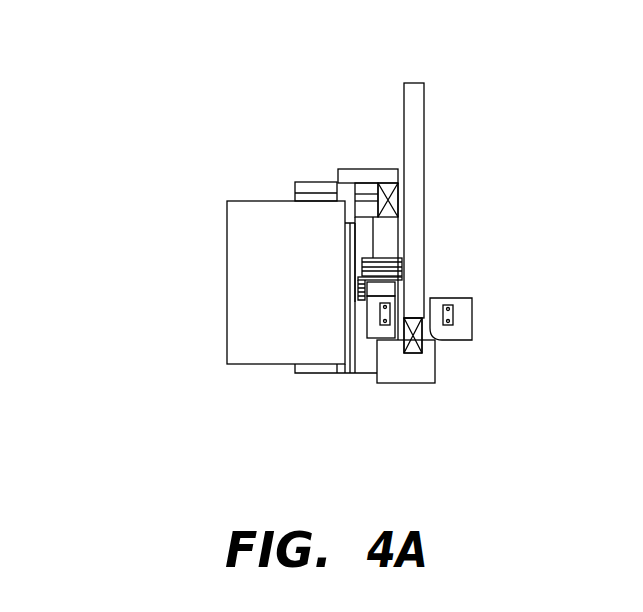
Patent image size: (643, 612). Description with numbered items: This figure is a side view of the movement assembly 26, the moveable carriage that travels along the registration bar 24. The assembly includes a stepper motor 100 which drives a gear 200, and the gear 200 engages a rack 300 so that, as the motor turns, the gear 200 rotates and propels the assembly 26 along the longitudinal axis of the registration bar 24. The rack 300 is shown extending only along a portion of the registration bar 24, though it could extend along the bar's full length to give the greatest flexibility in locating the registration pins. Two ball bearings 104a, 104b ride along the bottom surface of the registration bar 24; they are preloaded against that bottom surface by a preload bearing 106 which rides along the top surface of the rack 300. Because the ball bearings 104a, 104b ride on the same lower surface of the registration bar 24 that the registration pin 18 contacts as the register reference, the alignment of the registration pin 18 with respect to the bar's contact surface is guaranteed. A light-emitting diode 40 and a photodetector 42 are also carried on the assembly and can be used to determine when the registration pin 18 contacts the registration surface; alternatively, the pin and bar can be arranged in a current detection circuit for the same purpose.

The stepper motor 100 is at (252, 276).
The movement assembly 26 is at (372, 175).
The preload bearing 106 is at (396, 203).
The registration bar 24 is at (415, 157).
The rack 300 is at (400, 262).
The gear 200 is at (400, 275).
The photodetector 42 is at (380, 315).
The light-emitting diode 40 is at (453, 317).
The registration pin 18 is at (422, 377).
The ball bearing 104a is at (415, 350).
The ball bearing 104b is at (374, 380).